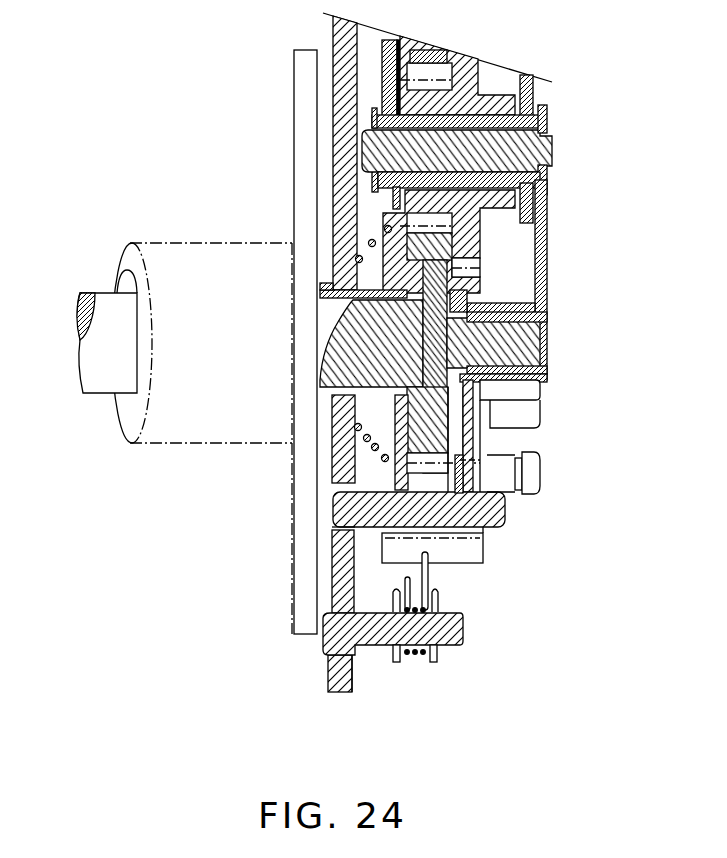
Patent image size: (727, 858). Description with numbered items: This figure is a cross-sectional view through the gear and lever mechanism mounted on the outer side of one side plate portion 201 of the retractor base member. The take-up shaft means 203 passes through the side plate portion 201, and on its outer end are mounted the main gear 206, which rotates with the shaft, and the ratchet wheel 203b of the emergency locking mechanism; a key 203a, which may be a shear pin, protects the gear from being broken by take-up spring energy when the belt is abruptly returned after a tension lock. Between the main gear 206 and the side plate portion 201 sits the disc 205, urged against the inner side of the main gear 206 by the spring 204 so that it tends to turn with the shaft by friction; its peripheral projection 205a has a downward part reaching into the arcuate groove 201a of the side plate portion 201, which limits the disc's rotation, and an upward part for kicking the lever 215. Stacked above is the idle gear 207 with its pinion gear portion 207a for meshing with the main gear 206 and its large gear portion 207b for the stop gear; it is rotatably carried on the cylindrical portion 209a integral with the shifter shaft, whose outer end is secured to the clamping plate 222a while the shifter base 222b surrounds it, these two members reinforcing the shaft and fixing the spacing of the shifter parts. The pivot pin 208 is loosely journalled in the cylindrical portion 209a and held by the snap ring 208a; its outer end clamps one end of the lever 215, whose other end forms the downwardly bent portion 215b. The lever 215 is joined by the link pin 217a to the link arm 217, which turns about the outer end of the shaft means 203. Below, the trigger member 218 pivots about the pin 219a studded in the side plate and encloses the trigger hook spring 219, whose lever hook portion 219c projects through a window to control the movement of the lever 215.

The side plate portion 201 is at (340, 693).
The arcuate groove 201a is at (333, 527).
The take-up shaft means 203 is at (100, 396).
The key 203a is at (442, 278).
The ratchet wheel 203b is at (292, 580).
The spring 204 is at (368, 242).
The disc 205 is at (397, 268).
The projection 205a is at (345, 512).
The main gear 206 is at (440, 247).
The idle gear 207 is at (497, 90).
The pinion gear portion 207a is at (427, 72).
The lower pin 207b is at (493, 264).
The pivot pin 208 is at (550, 150).
The snap ring 208a is at (372, 116).
The cylindrical portion 209a is at (542, 177).
The lever 215 is at (547, 260).
The downwardly bent portion 215b is at (483, 551).
The link arm 217 is at (547, 321).
The link pin 217a is at (503, 488).
The trigger member 218 is at (438, 654).
The trigger hook spring 219 is at (423, 658).
The pin 219a is at (368, 656).
The lever hook portion 219c is at (428, 575).
The clamping plate 222a is at (534, 88).
The shifter base 222b is at (400, 38).